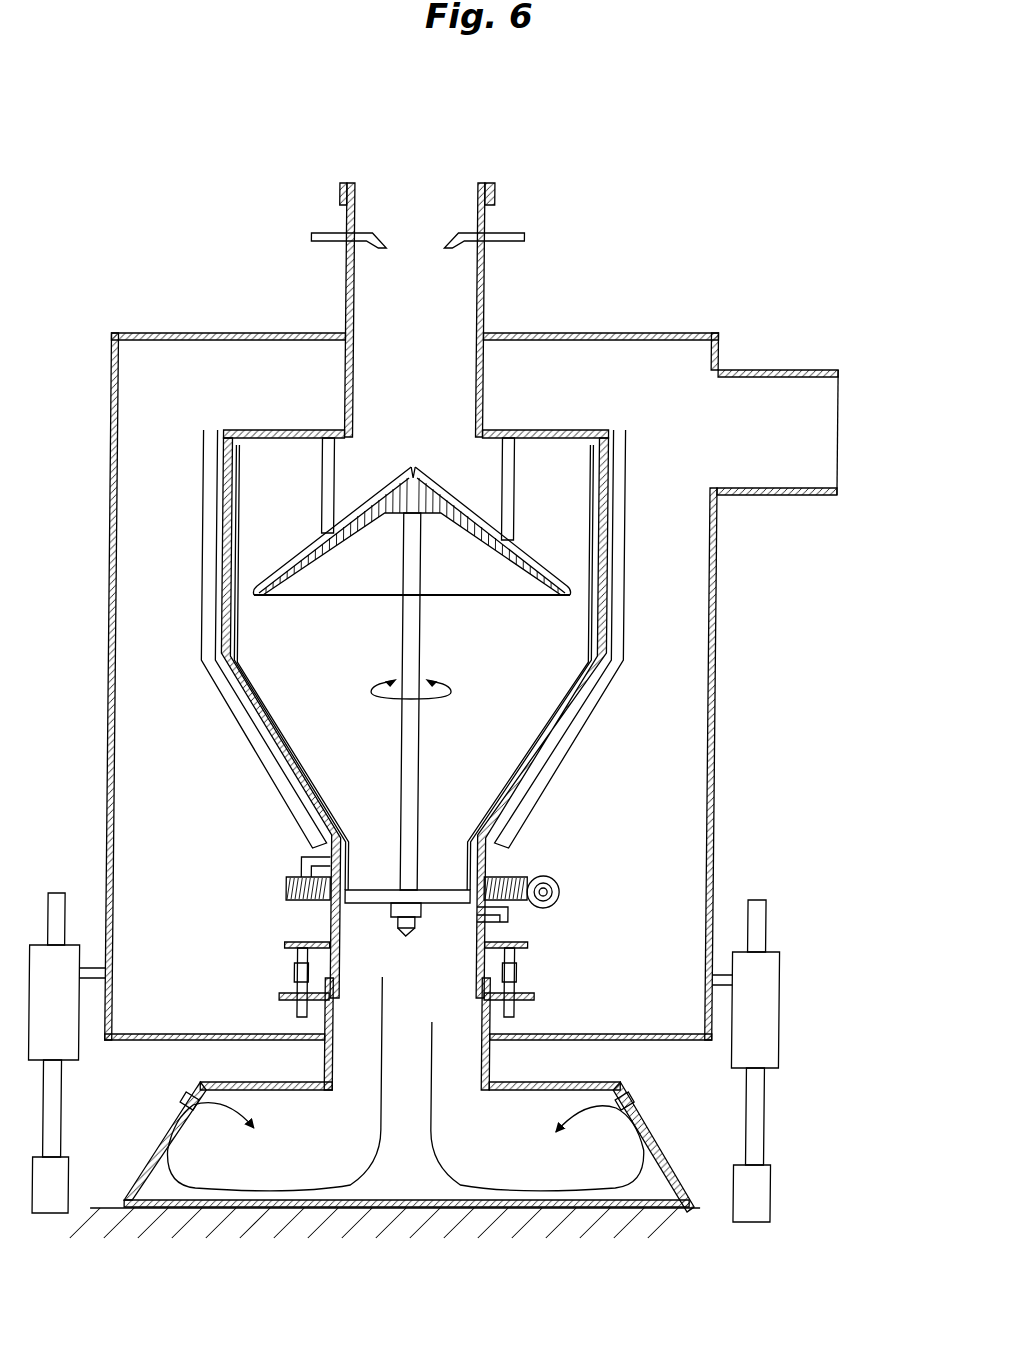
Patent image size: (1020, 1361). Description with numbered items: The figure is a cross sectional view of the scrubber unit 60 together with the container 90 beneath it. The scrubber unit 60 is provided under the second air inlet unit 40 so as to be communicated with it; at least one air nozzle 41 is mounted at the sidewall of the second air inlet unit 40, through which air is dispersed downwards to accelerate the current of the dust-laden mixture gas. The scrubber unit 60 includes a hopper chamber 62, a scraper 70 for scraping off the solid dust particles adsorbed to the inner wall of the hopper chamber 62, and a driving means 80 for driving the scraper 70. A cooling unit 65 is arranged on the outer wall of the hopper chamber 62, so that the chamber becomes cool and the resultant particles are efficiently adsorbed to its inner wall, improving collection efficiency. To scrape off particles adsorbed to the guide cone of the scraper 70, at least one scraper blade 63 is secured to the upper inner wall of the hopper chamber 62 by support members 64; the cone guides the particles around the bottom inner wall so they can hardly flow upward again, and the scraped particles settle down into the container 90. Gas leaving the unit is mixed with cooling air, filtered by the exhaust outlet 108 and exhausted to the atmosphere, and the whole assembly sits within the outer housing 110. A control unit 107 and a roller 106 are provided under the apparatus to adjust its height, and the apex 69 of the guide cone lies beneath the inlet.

The second air inlet unit 40 is at (505, 295).
The air nozzle 41 is at (508, 240).
The scrubber unit 60 is at (620, 714).
The hopper chamber 62 is at (282, 430).
The scraper blade 63 is at (522, 549).
The support member 64 is at (506, 476).
The cooling unit 65 is at (262, 742).
The cone apex 69 is at (410, 470).
The scraper 70 is at (462, 670).
The driving means 80 is at (284, 887).
The container 90 is at (670, 1140).
The roller 106 is at (775, 1195).
The control unit 107 is at (775, 990).
The exhaust outlet 108 is at (828, 430).
The outer housing 110 is at (190, 333).